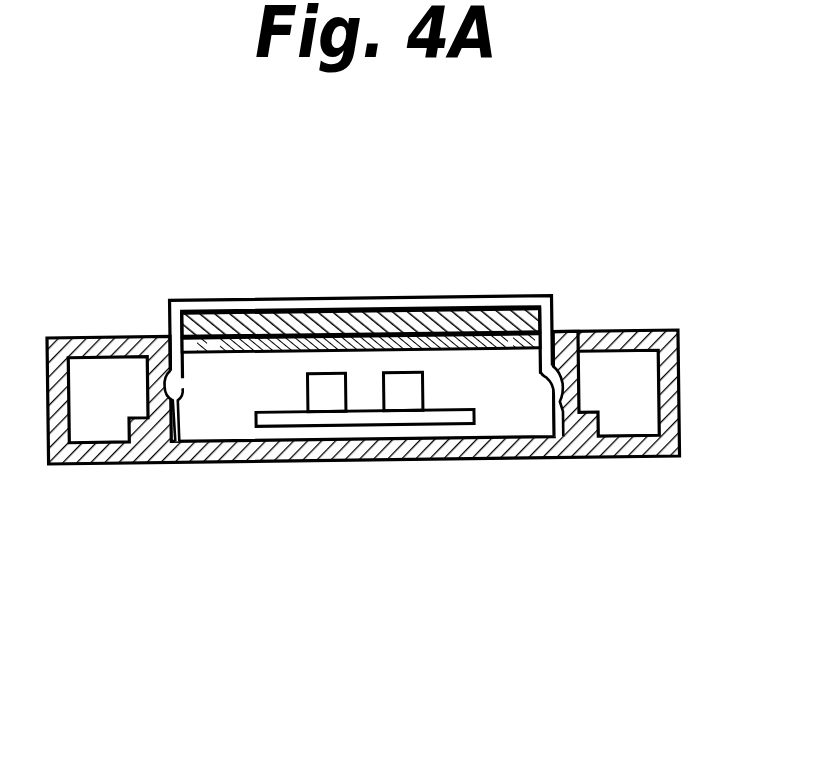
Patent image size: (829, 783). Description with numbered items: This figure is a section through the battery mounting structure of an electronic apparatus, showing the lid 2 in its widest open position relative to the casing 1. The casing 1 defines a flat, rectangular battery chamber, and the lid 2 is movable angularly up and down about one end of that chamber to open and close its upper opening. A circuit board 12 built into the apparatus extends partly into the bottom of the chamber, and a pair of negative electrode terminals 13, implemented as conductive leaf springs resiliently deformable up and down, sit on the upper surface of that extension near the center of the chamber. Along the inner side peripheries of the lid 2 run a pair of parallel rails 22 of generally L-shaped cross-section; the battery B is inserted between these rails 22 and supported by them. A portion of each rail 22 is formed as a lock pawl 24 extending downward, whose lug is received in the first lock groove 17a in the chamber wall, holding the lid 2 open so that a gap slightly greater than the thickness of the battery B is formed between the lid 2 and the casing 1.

The casing 1 is at (645, 464).
The lid 2 is at (250, 303).
The circuit board 12 is at (407, 421).
The negative electrode terminals 13 is at (325, 398).
The first lock groove 17a is at (585, 338).
The rails 22 is at (200, 355).
The lock pawl 24 is at (540, 384).
The battery B is at (374, 316).